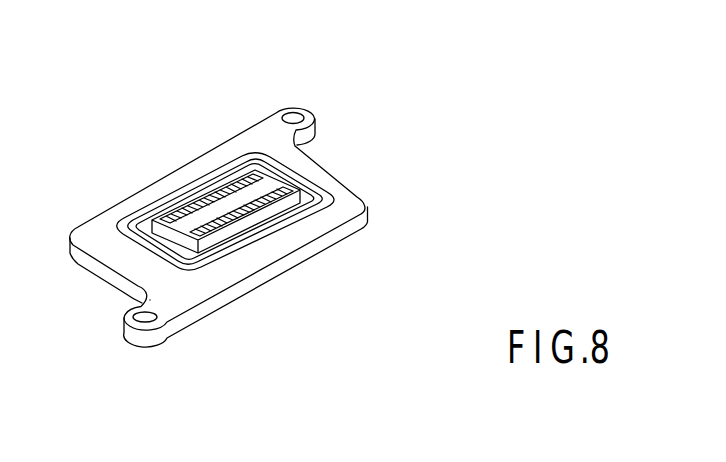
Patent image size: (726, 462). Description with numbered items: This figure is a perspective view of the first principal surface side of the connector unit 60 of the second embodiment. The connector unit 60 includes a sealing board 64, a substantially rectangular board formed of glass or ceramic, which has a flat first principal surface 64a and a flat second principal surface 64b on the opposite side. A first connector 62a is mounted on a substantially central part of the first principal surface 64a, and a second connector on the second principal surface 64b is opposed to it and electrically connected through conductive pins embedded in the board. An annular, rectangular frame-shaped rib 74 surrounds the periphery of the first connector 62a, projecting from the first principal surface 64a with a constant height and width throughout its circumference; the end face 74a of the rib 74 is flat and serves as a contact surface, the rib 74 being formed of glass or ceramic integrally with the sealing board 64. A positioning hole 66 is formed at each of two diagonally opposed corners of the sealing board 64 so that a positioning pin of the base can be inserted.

The connector unit 60 is at (221, 221).
The first connector 62a is at (224, 200).
The sealing board 64 is at (88, 229).
The first principal surface 64a is at (183, 291).
The second principal surface 64b is at (285, 275).
The positioning hole 66 is at (293, 117).
The rib 74 is at (260, 202).
The end face 74a is at (293, 216).